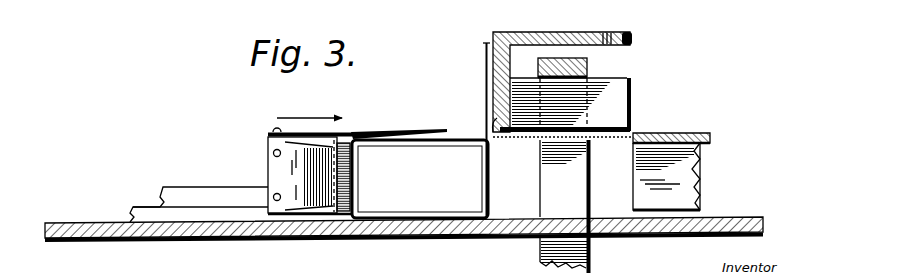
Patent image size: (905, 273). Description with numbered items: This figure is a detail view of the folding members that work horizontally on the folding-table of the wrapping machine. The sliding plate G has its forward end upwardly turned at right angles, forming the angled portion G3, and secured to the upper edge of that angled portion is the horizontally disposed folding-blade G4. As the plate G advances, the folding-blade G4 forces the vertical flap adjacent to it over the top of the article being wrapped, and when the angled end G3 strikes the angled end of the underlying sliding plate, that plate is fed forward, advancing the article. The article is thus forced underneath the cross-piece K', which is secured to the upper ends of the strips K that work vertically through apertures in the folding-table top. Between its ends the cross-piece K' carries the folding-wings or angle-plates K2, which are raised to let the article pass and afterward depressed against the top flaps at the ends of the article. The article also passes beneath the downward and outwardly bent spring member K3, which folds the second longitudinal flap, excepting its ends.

The sliding plate G is at (177, 193).
The upwardly turned forward end G3 is at (298, 173).
The folding-blade G4 is at (350, 124).
The strips K is at (563, 152).
The cross-piece K' is at (585, 87).
The folding-wings or angle-plates K2 is at (620, 105).
The spring member K3 is at (615, 140).